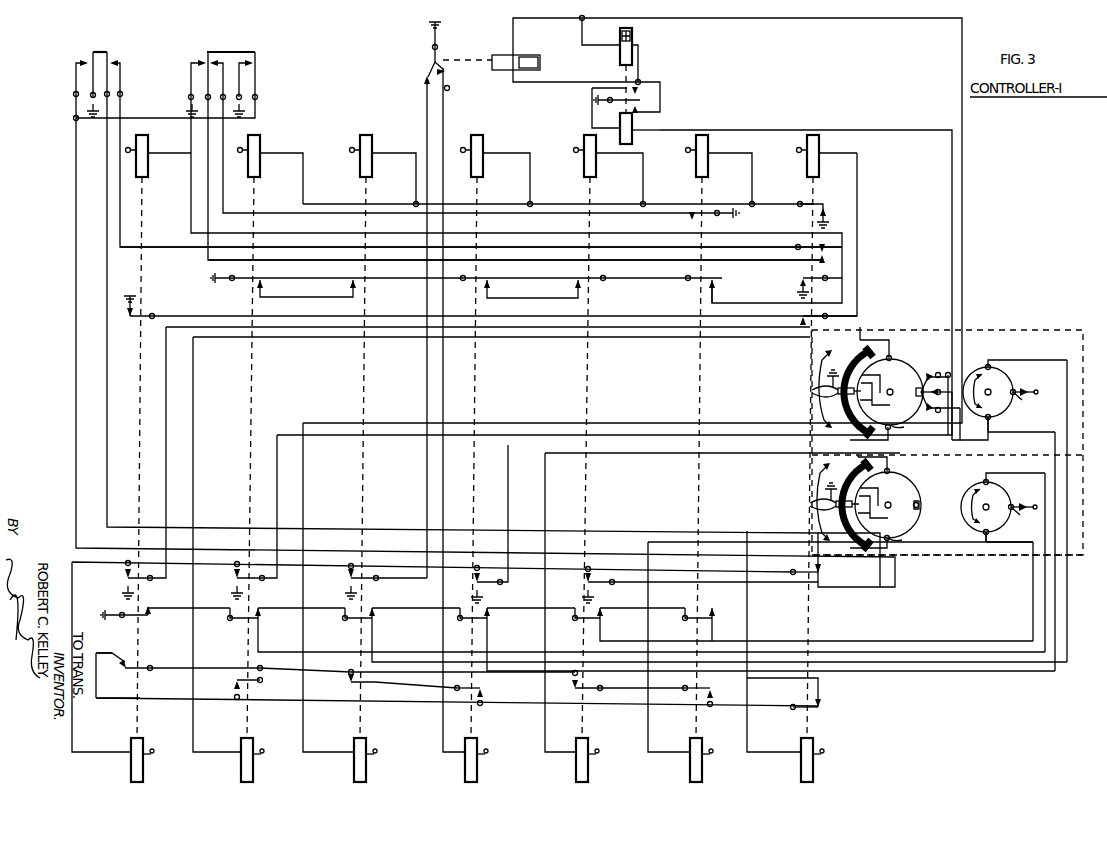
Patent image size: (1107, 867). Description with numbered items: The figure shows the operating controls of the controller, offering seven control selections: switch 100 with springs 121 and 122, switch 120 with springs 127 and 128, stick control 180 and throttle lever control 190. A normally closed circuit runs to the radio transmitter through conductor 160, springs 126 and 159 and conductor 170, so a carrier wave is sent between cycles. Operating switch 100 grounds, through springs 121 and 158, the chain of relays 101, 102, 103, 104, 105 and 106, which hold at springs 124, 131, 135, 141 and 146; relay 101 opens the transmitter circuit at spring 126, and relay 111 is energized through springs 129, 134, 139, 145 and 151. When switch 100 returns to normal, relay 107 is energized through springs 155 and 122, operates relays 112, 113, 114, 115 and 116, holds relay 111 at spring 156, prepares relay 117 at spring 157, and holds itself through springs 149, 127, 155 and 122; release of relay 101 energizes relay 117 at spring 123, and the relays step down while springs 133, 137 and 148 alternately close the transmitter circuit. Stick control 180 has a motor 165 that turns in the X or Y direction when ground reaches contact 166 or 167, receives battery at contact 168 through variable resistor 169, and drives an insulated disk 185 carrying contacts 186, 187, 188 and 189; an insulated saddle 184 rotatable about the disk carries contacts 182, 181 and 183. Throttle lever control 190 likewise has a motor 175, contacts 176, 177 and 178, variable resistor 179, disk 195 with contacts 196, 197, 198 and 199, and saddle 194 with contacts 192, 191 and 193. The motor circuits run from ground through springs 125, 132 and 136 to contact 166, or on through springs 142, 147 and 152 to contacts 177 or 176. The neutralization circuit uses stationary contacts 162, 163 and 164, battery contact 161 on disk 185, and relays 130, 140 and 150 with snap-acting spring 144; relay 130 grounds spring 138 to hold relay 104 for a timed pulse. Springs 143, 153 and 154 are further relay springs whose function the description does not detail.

The switch 100 is at (101, 50).
The spring 121 is at (76, 62).
The spring 122 is at (124, 60).
The switch 120 is at (232, 50).
The spring 127 is at (202, 58).
The spring 128 is at (256, 62).
The relay 111 is at (144, 140).
The relay 112 is at (256, 140).
The relay 113 is at (368, 140).
The relay 114 is at (479, 140).
The relay 115 is at (582, 138).
The relay 116 is at (704, 140).
The relay 117 is at (815, 140).
The relay 101 is at (135, 770).
The relay 102 is at (245, 770).
The relay 103 is at (358, 770).
The relay 104 is at (469, 770).
The relay 105 is at (580, 770).
The relay 106 is at (694, 770).
The relay 107 is at (805, 770).
The spring 123 is at (140, 316).
The spring 124 is at (118, 572).
The spring 125 is at (146, 618).
The spring 126 is at (148, 664).
The spring 129 is at (262, 278).
The relay 130 is at (515, 55).
The spring 131 is at (228, 576).
The spring 132 is at (238, 620).
The spring 133 is at (232, 682).
The spring 134 is at (346, 288).
The spring 135 is at (342, 576).
The spring 136 is at (374, 620).
The spring 137 is at (345, 680).
The spring 138 is at (430, 59).
The spring 139 is at (490, 278).
The relay 140 is at (632, 40).
The spring 141 is at (480, 592).
The spring 142 is at (486, 622).
The relay contact 143 is at (483, 686).
The spring 144 is at (640, 102).
The spring 145 is at (575, 282).
The spring 146 is at (592, 592).
The spring 147 is at (598, 624).
The spring 148 is at (570, 690).
The spring 149 is at (680, 215).
The relay 150 is at (636, 122).
The spring 151 is at (718, 288).
The spring 152 is at (706, 598).
The relay contact 153 is at (712, 688).
The relay contact 154 is at (805, 212).
The spring 155 is at (842, 252).
The spring 156 is at (790, 276).
The spring 157 is at (790, 317).
The spring 158 is at (822, 574).
The spring 159 is at (792, 700).
The conductor 160 is at (112, 650).
The contact 161 is at (925, 368).
The stationary contact 162 is at (930, 372).
The stationary contact 163 is at (945, 410).
The stationary contact 164 is at (935, 419).
The motor 165 is at (972, 428).
The contact 166 is at (992, 365).
The contact 167 is at (975, 440).
The contact 168 is at (1020, 404).
The variable resistor 169 is at (1022, 386).
The conductor 170 is at (130, 702).
The motor 175 is at (975, 540).
The contact 176 is at (980, 478).
The contact 177 is at (990, 560).
The contact 178 is at (1018, 516).
The variable resistor 179 is at (1026, 490).
The stick control 180 is at (922, 432).
The contact 181 is at (836, 387).
The contact 182 is at (870, 332).
The contact 183 is at (830, 412).
The insulated saddle 184 is at (832, 394).
The insulated disk 185 is at (887, 436).
The contact 186 is at (895, 350).
The contact 187 is at (880, 376).
The contact 188 is at (879, 386).
The contact 189 is at (905, 428).
The throttle lever control 190 is at (922, 521).
The contact 191 is at (836, 507).
The contact 192 is at (890, 465).
The contact 193 is at (876, 556).
The insulated saddle 194 is at (830, 494).
The insulated disk 195 is at (920, 505).
The contact 196 is at (880, 484).
The contact 197 is at (880, 496).
The contact 198 is at (880, 516).
The contact 199 is at (892, 540).